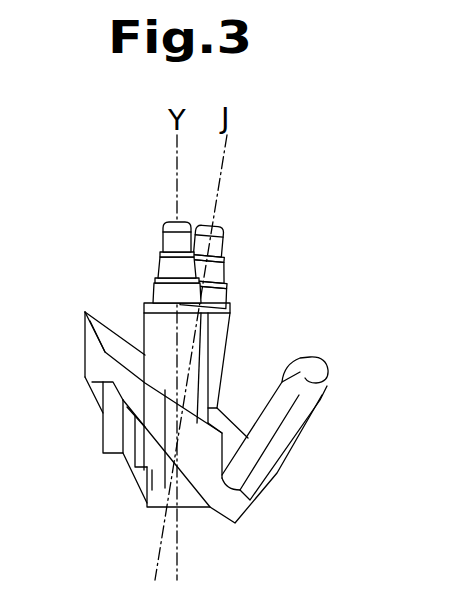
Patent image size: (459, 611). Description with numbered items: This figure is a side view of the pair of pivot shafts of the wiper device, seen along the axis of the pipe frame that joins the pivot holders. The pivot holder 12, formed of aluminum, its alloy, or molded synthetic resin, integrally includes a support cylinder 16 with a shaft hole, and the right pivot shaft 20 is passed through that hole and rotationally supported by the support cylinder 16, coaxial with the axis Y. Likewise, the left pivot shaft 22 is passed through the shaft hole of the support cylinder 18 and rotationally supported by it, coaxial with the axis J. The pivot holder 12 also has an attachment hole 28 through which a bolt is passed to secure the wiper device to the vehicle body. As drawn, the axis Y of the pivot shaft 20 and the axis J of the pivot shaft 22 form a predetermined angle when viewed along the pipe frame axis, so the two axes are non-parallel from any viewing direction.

The pivot holder 12 is at (98, 384).
The support cylinder 16 is at (198, 378).
The support cylinder 18 is at (232, 322).
The right pivot shaft 20 is at (165, 238).
The left pivot shaft 22 is at (227, 242).
The attachment hole 28 is at (310, 389).